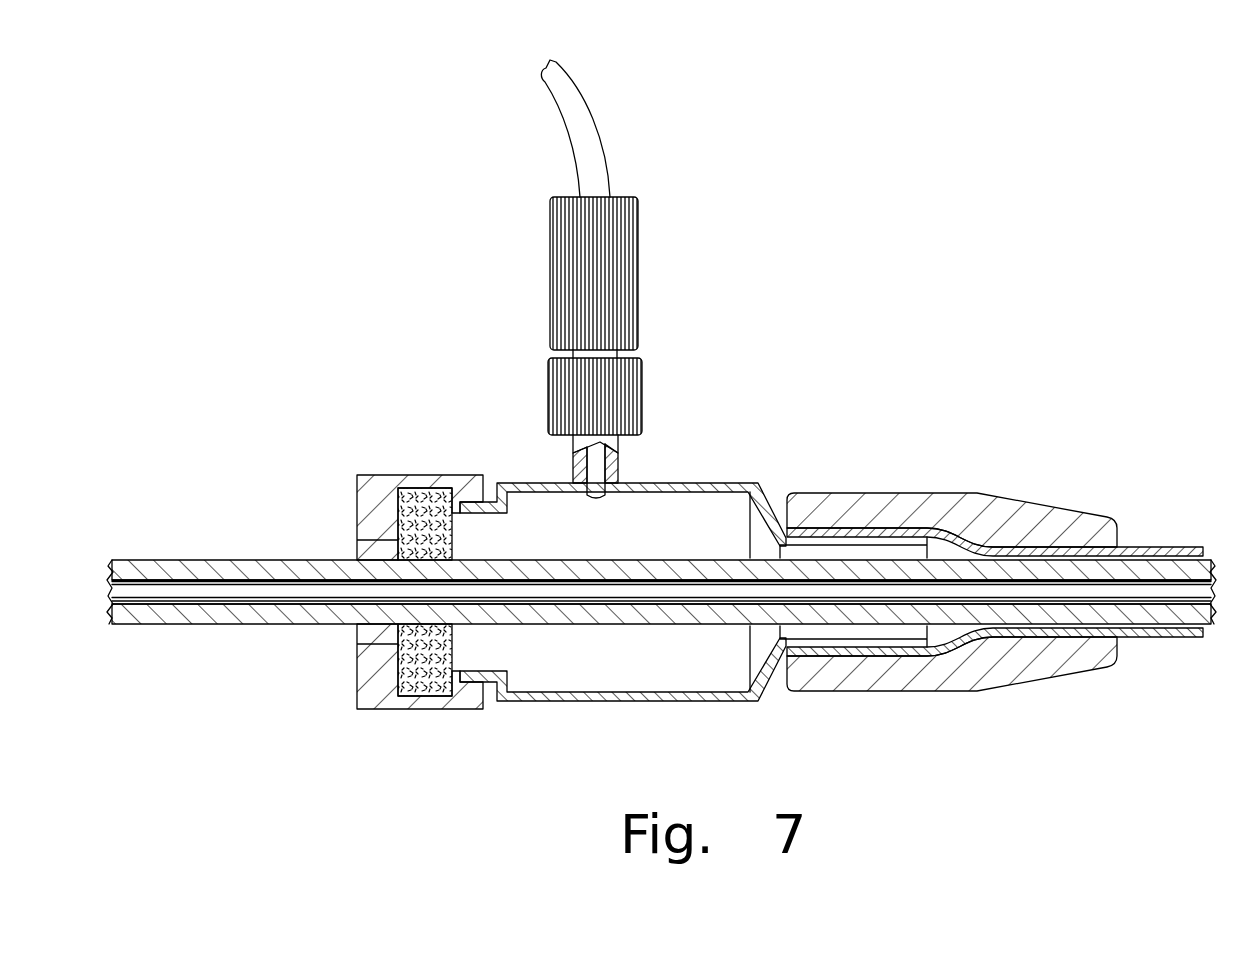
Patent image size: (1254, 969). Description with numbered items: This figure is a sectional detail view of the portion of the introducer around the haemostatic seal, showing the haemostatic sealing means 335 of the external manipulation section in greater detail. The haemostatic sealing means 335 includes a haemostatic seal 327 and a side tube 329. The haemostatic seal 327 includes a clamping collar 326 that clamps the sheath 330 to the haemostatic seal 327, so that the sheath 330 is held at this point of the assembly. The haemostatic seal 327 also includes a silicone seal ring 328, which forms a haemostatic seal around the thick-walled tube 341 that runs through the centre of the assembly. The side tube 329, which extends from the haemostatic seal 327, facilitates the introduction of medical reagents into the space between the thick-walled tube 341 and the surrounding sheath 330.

The clamping collar 326 is at (873, 498).
The haemostatic seal 327 is at (590, 703).
The silicone seal ring 328 is at (422, 712).
The side tube 329 is at (600, 137).
The sheath 330 is at (1150, 547).
The haemostatic sealing means 335 is at (737, 545).
The thick-walled tube 341 is at (272, 607).